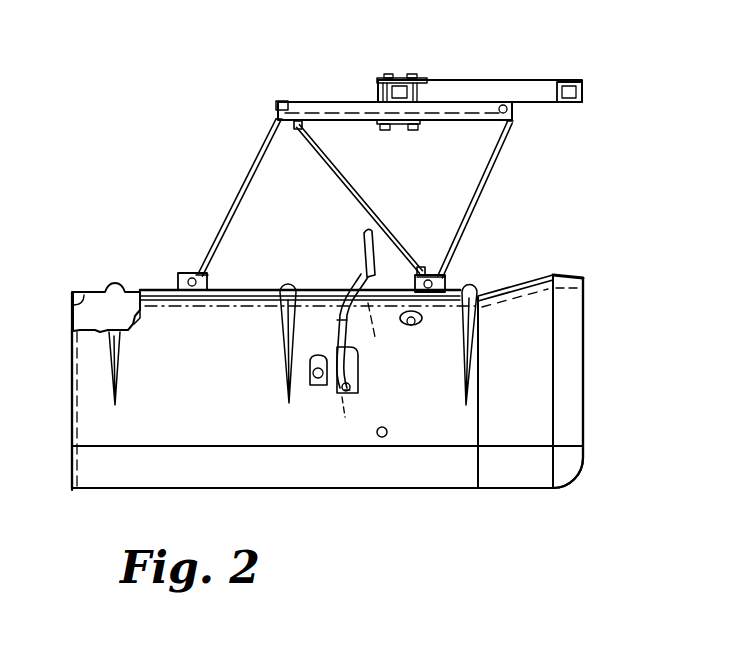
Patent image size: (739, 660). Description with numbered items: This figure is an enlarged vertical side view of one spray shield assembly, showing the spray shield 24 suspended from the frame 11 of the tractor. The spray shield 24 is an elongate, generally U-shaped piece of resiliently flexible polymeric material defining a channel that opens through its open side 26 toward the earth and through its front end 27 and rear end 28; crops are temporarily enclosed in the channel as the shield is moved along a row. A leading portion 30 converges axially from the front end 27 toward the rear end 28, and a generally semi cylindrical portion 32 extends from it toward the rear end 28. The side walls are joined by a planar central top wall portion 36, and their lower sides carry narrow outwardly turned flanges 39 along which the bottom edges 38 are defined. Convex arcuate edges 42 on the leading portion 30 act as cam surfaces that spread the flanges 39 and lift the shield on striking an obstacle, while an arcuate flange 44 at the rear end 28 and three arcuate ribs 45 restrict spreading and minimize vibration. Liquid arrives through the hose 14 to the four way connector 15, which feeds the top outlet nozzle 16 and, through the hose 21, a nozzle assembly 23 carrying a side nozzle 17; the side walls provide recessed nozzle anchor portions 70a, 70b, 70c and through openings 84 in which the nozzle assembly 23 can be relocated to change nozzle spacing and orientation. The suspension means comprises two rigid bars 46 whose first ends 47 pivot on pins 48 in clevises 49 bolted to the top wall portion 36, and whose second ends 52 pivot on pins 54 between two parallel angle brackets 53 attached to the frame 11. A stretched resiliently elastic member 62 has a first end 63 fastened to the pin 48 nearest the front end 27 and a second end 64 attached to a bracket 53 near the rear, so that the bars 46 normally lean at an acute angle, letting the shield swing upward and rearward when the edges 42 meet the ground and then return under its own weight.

The frame 11 is at (527, 84).
The hose 14 is at (362, 236).
The four way connector 15 is at (362, 270).
The liquid outlet nozzle 16 is at (393, 333).
The liquid outlet nozzle 17 is at (335, 395).
The hose 21 is at (342, 320).
The liquid outlet nozzle assembly 23 is at (347, 393).
The spray shield 24 is at (88, 422).
The open side 26 is at (187, 490).
The front end 27 is at (583, 328).
The rear end 28 is at (72, 358).
The leading portion 30 is at (530, 395).
The semi cylindrical portion 32 is at (157, 318).
The central top wall portion 36 is at (245, 290).
The bottom edges 38 is at (363, 488).
The flanges 39 is at (288, 472).
The convex arcuate edges 42 is at (573, 480).
The arcuate flange 44 is at (85, 290).
The arcuate ribs 45 is at (120, 362).
The rigid bars 46 is at (248, 176).
The first ends 47 is at (203, 275).
The pins 48 is at (190, 278).
The clevises 49 is at (200, 290).
The second ends 52 is at (276, 123).
The angle brackets 53 is at (335, 108).
The pins 54 is at (286, 98).
The resiliently elastic member 62 is at (370, 202).
The first end 63 is at (417, 272).
The second end 64 is at (303, 128).
The nozzle anchor portion 70a is at (412, 327).
The nozzle anchor portion 70b is at (358, 385).
The nozzle anchor portion 70c is at (315, 387).
The through openings 84 is at (385, 437).